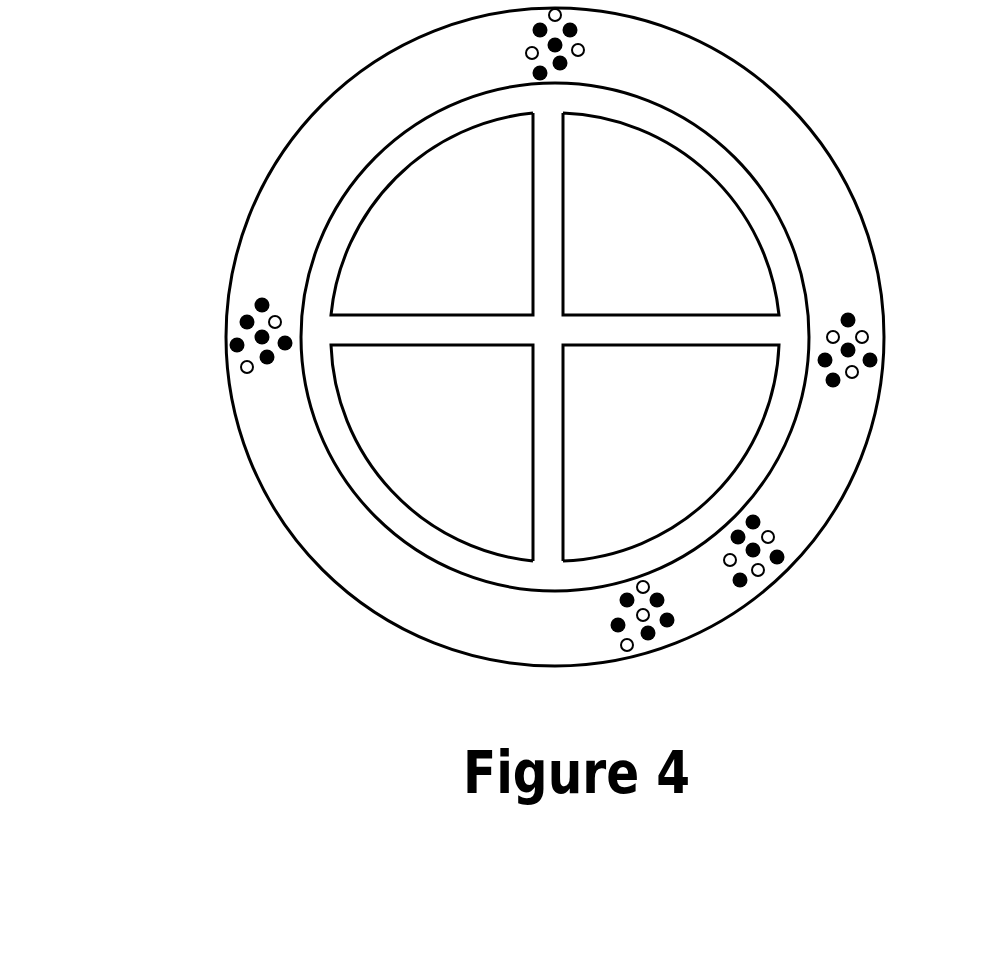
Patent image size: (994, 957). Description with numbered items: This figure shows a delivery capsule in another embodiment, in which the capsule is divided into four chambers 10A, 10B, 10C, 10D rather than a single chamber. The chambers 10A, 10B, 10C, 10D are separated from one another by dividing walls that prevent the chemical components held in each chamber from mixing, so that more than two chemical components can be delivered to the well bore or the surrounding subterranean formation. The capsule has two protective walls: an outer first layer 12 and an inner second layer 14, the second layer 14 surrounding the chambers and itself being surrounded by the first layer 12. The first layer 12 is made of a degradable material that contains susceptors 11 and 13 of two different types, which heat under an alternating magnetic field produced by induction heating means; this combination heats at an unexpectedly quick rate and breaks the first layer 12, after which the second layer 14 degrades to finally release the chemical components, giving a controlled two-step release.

The chamber 10A is at (477, 248).
The chamber 10B is at (697, 250).
The chamber 10C is at (477, 440).
The chamber 10D is at (713, 440).
The susceptor 11 is at (240, 321).
The first layer 12 is at (270, 228).
The susceptor 13 is at (242, 363).
The second layer 14 is at (385, 168).